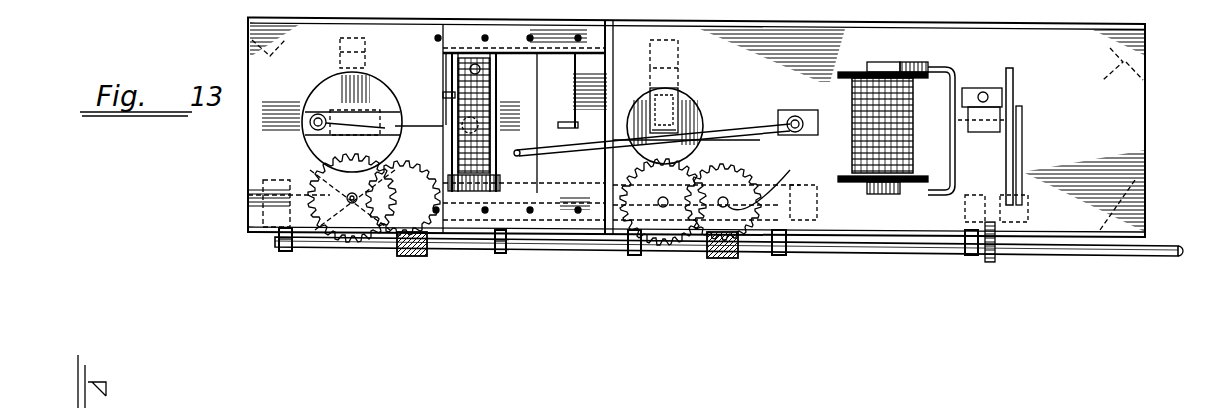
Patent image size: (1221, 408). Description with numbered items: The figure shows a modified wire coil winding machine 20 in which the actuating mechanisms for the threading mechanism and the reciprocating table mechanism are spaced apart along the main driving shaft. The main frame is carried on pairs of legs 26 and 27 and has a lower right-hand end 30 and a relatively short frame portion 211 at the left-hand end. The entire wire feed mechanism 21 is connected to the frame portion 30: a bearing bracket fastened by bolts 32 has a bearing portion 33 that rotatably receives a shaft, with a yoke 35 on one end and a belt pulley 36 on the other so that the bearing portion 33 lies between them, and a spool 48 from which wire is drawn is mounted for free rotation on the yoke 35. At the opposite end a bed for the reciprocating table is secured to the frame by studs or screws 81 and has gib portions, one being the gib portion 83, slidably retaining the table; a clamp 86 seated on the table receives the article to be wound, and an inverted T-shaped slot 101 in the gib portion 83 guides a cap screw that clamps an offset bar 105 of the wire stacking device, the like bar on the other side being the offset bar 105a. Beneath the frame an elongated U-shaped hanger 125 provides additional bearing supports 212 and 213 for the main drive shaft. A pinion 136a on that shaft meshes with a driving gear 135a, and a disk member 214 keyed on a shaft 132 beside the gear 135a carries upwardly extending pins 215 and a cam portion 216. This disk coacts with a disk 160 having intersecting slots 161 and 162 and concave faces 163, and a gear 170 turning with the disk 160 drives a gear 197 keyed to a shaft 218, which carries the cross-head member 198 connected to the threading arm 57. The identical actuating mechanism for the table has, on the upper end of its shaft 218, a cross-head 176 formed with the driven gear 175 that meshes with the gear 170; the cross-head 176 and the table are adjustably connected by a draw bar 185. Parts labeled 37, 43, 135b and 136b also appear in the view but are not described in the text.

The wire coil winding machine 20 is at (777, 76).
The wire feed mechanism 21 is at (962, 70).
The legs 26 is at (1123, 71).
The legs 27 is at (268, 83).
The frame end portion 30 is at (1135, 118).
The bolts 32 is at (805, 190).
The bearing portion 33 is at (988, 108).
The yoke 35 is at (942, 51).
The belt pulley 36 is at (1017, 107).
The armature lever 37 is at (1013, 185).
The drive shaft 43 is at (972, 260).
The spool 48 is at (873, 56).
The threading arm 57 is at (758, 124).
The studs or screws 81 is at (485, 35).
The gib portion 83 is at (518, 47).
The clamp 86 is at (480, 96).
The inverted T-shaped slot 101 is at (654, 199).
The offset bar 105 is at (577, 103).
The offset bar 105a is at (445, 92).
The U-shaped hanger 125 is at (805, 226).
The shaft 132 is at (783, 223).
The driving gear 135a is at (752, 256).
The shaft bearing hanger 135b is at (452, 254).
The pinion 136a is at (730, 262).
The worm 136b is at (410, 258).
The disk 160 is at (640, 258).
The slot 161 is at (299, 151).
The slot 162 is at (308, 255).
The concave faces 163 is at (608, 252).
The gear 170 is at (366, 250).
The driven gear 175 is at (372, 85).
The cross-head 176 is at (313, 83).
The draw bar 185 is at (380, 90).
The gear 197 is at (690, 118).
The cross-head member 198 is at (690, 103).
The frame portion 211 is at (248, 148).
The bearing support 212 is at (500, 258).
The bearing support 213 is at (632, 256).
The disk member 214 is at (735, 158).
The pins 215 is at (690, 266).
The cam portion 216 is at (800, 212).
The shaft 218 is at (682, 92).